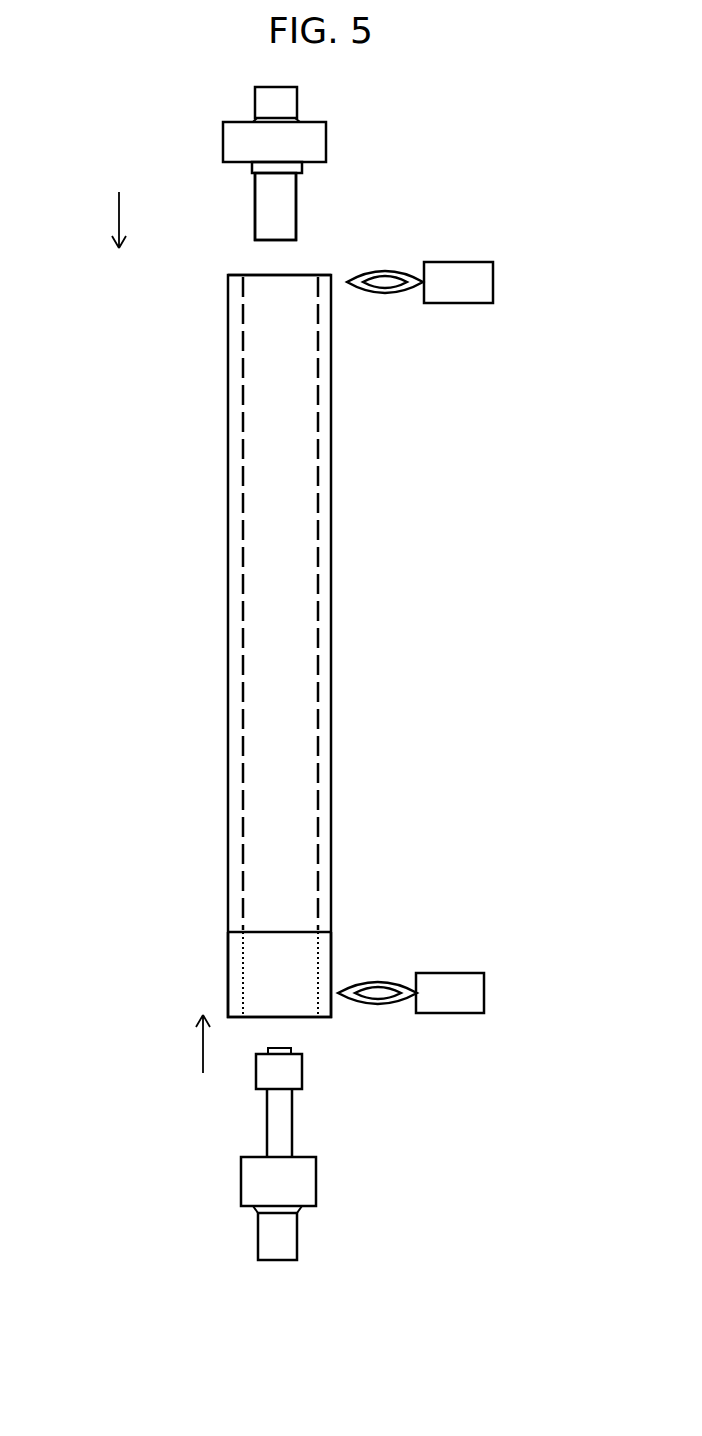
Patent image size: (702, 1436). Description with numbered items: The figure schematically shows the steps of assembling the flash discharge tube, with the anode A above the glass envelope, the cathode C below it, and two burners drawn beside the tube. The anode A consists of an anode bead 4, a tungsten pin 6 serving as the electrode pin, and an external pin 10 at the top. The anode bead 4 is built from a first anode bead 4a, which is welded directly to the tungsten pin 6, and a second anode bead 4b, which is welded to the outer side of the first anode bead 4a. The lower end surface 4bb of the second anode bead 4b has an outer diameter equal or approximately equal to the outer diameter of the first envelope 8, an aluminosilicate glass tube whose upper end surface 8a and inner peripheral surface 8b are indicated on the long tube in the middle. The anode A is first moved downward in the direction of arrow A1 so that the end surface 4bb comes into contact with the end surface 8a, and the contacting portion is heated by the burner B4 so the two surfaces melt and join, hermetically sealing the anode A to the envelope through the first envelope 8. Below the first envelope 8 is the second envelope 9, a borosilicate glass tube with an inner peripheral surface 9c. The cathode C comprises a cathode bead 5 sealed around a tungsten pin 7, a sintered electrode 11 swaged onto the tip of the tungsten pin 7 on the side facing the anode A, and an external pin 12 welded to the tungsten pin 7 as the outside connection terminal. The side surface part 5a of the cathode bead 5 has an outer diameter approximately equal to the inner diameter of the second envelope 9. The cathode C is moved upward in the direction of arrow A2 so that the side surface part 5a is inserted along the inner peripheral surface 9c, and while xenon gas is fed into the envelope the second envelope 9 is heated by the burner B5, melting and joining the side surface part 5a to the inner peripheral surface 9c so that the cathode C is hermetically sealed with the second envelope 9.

The anode bead 4 is at (349, 181).
The first anode bead 4a is at (300, 170).
The second anode bead 4b is at (317, 136).
The end surface 4bb is at (427, 182).
The cathode bead 5 is at (335, 1179).
The side surface part 5a is at (317, 1180).
The tungsten pin 6 is at (265, 202).
The tungsten pin 7 is at (280, 1133).
The first envelope 8 is at (280, 627).
The end surface 8a is at (233, 273).
The inner peripheral surface 8b is at (396, 682).
The second envelope 9 is at (233, 967).
The inner peripheral surface 9c is at (243, 960).
The external pin 10 is at (268, 100).
The sintered electrode 11 is at (290, 1073).
The external pin 12 is at (287, 1233).
The anode A is at (160, 112).
The arrow A1 is at (115, 225).
The arrow A2 is at (195, 1045).
The burner B4 is at (483, 277).
The burner B5 is at (448, 972).
The cathode C is at (217, 1160).